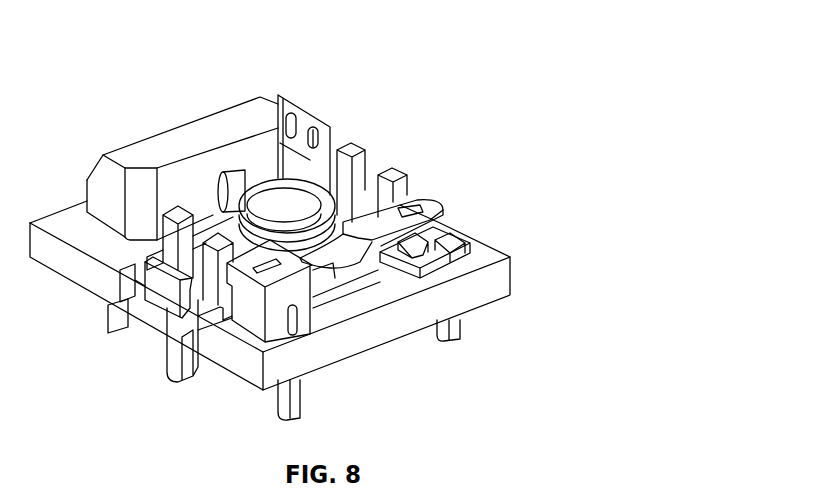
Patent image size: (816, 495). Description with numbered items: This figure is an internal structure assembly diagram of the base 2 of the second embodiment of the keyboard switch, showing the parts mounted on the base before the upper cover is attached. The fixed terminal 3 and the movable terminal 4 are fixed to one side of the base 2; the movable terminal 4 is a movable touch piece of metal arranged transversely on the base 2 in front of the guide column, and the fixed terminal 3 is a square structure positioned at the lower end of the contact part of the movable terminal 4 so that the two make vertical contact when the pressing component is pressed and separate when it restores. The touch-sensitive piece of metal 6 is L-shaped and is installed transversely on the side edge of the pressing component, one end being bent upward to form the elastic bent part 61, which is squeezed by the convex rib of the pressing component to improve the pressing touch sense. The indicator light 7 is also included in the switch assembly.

The base 2 is at (487, 283).
The fixed terminal 3 is at (437, 227).
The movable terminal 4 is at (427, 200).
The touch-sensitive piece of metal 6 is at (297, 128).
The elastic bent part 61 is at (227, 165).
The indicator light 7 is at (193, 123).